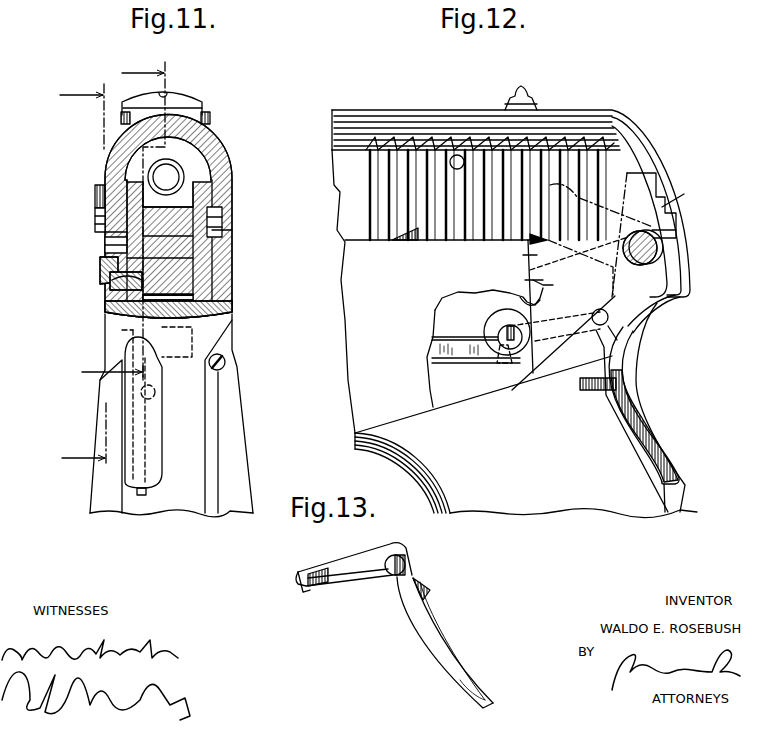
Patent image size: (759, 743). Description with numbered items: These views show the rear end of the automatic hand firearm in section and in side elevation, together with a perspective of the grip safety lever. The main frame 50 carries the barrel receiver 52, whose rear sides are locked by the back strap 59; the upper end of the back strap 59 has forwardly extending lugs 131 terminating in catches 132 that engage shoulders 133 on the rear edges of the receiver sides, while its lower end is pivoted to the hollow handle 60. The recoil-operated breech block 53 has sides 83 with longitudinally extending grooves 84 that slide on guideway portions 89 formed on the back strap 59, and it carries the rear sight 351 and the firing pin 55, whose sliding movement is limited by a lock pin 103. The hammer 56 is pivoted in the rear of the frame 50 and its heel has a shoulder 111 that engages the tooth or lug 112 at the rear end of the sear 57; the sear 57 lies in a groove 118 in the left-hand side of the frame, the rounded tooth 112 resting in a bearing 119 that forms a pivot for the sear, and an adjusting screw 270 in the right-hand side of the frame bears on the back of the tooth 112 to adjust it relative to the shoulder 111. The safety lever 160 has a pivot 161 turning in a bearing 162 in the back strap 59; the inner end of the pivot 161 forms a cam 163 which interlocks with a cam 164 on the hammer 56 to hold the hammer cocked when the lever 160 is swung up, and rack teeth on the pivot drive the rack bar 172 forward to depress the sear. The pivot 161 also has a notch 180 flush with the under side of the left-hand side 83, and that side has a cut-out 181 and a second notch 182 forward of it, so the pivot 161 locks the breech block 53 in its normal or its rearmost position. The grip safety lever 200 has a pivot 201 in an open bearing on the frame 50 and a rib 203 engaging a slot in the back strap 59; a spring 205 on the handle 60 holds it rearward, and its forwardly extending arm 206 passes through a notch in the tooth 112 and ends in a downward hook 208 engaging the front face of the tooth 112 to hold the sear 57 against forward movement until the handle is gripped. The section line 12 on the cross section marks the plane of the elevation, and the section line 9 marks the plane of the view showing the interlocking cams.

In FIG. 11, the section line 9 is at (115, 221).
In FIG. 11, the section line 12— 12 is at (72, 275).
In FIG. 12, the main frame 50 is at (553, 355).
In FIG. 12, the barrel receiver 52 is at (345, 305).
In FIG. 11, the breech block 53 is at (212, 140).
In FIG. 12, the breech block 53 is at (386, 122).
In FIG. 11, the firing pin 55 is at (170, 178).
In FIG. 11, the hammer 56 is at (226, 292).
In FIG. 12, the sear 57 is at (441, 355).
In FIG. 11, the back strap 59 is at (226, 273).
In FIG. 12, the back strap 59 is at (682, 295).
In FIG. 11, the handle 60 is at (97, 507).
In FIG. 12, the handle 60 is at (488, 513).
In FIG. 12, the sides of breech block 83 is at (340, 187).
In FIG. 11, the longitudinally extending grooves 84 is at (220, 230).
In FIG. 12, the longitudinally extending grooves 84 is at (668, 203).
In FIG. 11, the guideway portions 89 is at (128, 215).
In FIG. 12, the guideway portions 89 is at (670, 212).
In FIG. 12, the lock pin 103 is at (457, 155).
In FIG. 12, the shoulder 111 is at (512, 322).
In FIG. 12, the tooth or lug 112 is at (526, 372).
In FIG. 12, the groove 118 is at (438, 332).
In FIG. 12, the bearing 119 is at (487, 330).
In FIG. 12, the forwardly extending lugs 131 is at (521, 303).
In FIG. 12, the catches 132 is at (519, 272).
In FIG. 12, the shoulders 133 is at (586, 265).
In FIG. 11, the safety lever 160 is at (96, 190).
In FIG. 12, the safety lever 160 is at (600, 226).
In FIG. 11, the pivot 161 is at (100, 272).
In FIG. 12, the pivot 161 is at (630, 260).
In FIG. 11, the bearing 162 is at (113, 288).
In FIG. 12, the bearing 162 is at (660, 244).
In FIG. 11, the cam 163 is at (150, 258).
In FIG. 11, the cam 164 is at (150, 243).
In FIG. 11, the rack bar 172 is at (108, 310).
In FIG. 11, the notch 180 is at (108, 253).
In FIG. 12, the notch 180 is at (650, 232).
In FIG. 11, the cut-out portion 181 is at (127, 237).
In FIG. 12, the cut-out portion 181 is at (641, 232).
In FIG. 12, the second notch 182 is at (403, 232).
In FIG. 11, the grip safety lever 200 is at (152, 434).
In FIG. 12, the grip safety lever 200 is at (624, 360).
In FIG. 13, the grip safety lever 200 is at (432, 625).
In FIG. 11, the pivot 201 is at (128, 328).
In FIG. 12, the pivot 201 is at (620, 323).
In FIG. 13, the pivot 201 is at (392, 576).
In FIG. 11, the rib 203 is at (152, 468).
In FIG. 12, the rib 203 is at (662, 450).
In FIG. 13, the rib 203 is at (442, 663).
In FIG. 11, the spring 205 is at (156, 392).
In FIG. 12, the spring 205 is at (586, 392).
In FIG. 12, the arm 206 is at (543, 335).
In FIG. 13, the arm 206 is at (330, 582).
In FIG. 12, the hook 208 is at (505, 358).
In FIG. 13, the hook 208 is at (303, 590).
In FIG. 11, the adjusting screw 270 is at (226, 360).
In FIG. 11, the rear sight 351 is at (183, 105).
In FIG. 12, the rear sight 351 is at (530, 100).